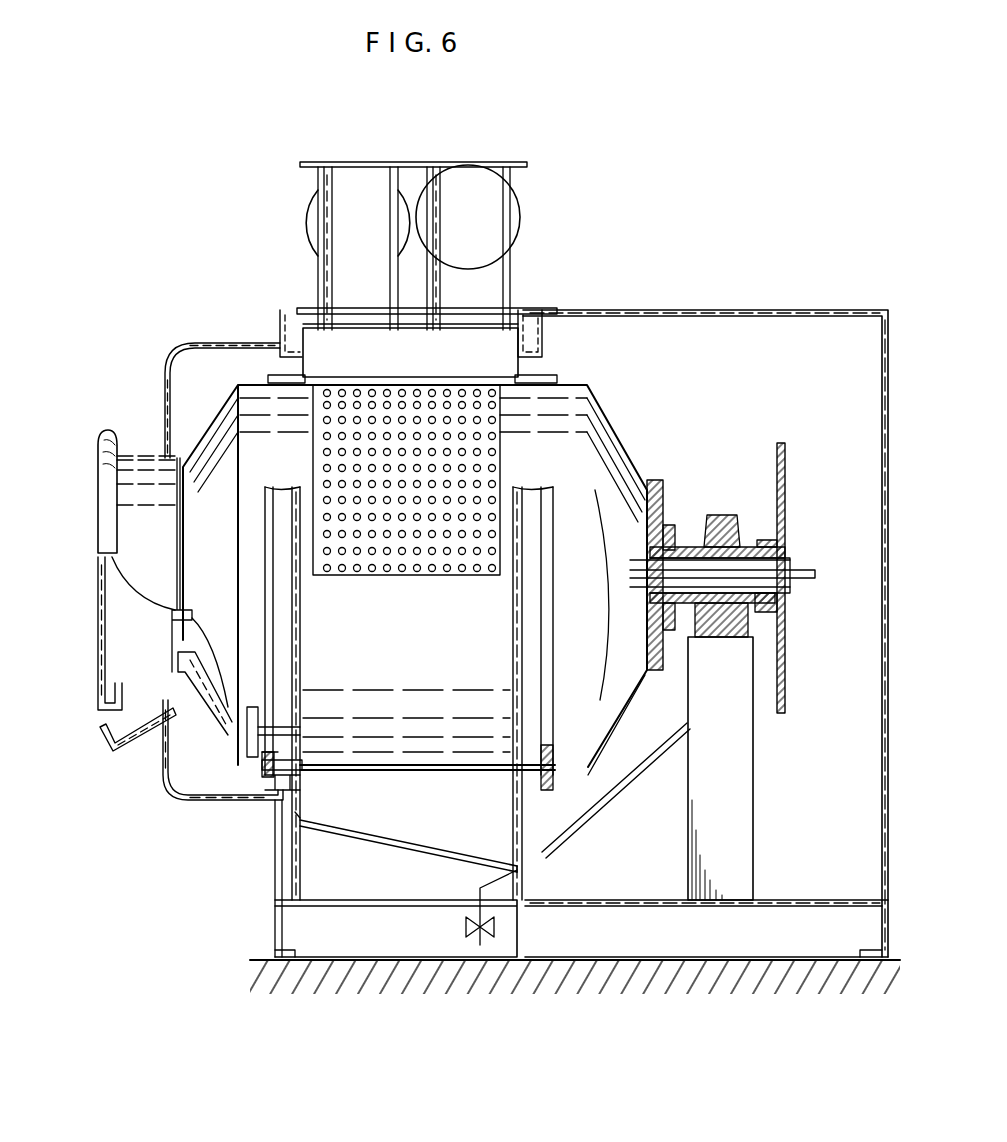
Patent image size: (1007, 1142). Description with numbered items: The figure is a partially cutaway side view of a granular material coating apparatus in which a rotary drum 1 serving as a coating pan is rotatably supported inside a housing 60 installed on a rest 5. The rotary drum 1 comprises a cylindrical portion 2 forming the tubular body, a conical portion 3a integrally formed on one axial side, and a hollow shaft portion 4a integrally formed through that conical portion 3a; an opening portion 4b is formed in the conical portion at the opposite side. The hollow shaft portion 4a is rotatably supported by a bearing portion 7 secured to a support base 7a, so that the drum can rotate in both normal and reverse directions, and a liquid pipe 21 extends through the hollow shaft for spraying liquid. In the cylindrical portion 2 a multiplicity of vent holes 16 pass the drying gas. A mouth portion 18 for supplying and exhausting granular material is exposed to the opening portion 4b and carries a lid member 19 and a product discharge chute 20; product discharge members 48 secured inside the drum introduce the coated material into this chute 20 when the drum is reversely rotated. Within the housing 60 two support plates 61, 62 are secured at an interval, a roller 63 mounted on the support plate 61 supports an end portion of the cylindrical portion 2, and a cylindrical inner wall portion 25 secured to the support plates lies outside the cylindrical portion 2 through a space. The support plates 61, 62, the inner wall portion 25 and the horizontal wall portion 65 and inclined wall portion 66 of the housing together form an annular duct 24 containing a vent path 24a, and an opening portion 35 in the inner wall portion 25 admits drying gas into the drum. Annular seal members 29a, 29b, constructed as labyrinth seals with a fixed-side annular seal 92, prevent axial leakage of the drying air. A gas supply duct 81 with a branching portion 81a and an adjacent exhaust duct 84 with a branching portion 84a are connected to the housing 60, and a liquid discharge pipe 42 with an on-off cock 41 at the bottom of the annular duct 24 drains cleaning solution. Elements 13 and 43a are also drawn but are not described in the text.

The rotary drum 1 is at (438, 555).
The cylindrical portion 2 is at (560, 392).
The conical portion 3a is at (615, 402).
The hollow shaft portion 4a is at (690, 547).
The opening portion 4b is at (172, 630).
The rest 5 is at (885, 912).
The bearing portion 7 is at (725, 515).
The support base 7a is at (755, 808).
The pulley plate 13 is at (788, 688).
The vent holes 16 is at (462, 575).
The mouth portion 18 is at (135, 570).
The lid member 19 is at (110, 477).
The product discharge chute 20 is at (132, 752).
The liquid pipe 21 is at (810, 563).
The annular duct 24 is at (365, 848).
The vent path 24a is at (478, 820).
The cylindrical inner wall portion 25 is at (325, 378).
The annular seal member 29a is at (548, 378).
The annular seal member 29b is at (270, 345).
The opening portion 35 is at (430, 380).
The on-off cock 41 is at (462, 927).
The liquid discharge pipe 42 is at (480, 888).
The bearing housing 43a is at (790, 590).
The product discharge members 48 is at (215, 655).
The housing 60 is at (735, 312).
The support plate 61 is at (545, 840).
The support plate 62 is at (265, 795).
The roller 63 is at (250, 775).
The horizontal wall portion 65 is at (520, 310).
The inclined wall portion 66 is at (392, 838).
The gas supply duct 81 is at (360, 162).
The branching portion 81a is at (330, 270).
The exhaust duct 84 is at (512, 158).
The branching portion 84a is at (498, 272).
The annular seal 92 is at (560, 772).